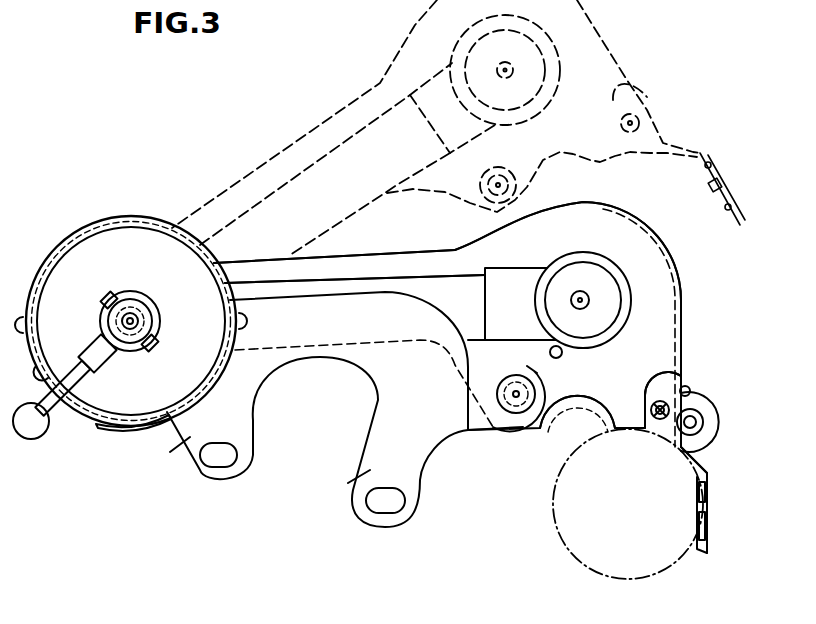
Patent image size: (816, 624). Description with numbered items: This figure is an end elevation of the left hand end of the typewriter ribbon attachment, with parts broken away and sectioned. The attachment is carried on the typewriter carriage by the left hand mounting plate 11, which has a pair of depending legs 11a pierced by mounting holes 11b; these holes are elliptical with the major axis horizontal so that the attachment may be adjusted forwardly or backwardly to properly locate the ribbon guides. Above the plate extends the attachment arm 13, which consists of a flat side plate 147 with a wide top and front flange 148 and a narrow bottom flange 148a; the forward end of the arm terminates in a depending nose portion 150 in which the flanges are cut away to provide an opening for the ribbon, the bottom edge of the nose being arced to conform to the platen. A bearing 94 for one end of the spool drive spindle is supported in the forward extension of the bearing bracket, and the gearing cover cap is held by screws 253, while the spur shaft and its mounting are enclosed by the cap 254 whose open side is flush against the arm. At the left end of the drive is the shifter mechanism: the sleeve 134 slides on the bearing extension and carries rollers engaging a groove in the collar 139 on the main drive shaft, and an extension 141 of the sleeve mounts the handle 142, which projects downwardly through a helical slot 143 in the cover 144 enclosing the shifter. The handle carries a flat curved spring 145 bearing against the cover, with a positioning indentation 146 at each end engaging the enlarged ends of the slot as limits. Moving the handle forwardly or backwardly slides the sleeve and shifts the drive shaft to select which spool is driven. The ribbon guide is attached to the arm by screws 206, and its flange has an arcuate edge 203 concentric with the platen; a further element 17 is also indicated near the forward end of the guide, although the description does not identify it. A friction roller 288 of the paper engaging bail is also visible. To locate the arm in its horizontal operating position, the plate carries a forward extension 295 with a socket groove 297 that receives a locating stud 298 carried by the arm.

The mounting plate 11 is at (334, 385).
The depending legs 11a is at (261, 472).
The mounting holes 11b is at (215, 462).
The attachment arm 13 is at (557, 210).
The bracket 17 is at (716, 465).
The bearing 94 is at (568, 255).
The sleeve 134 is at (145, 300).
The collar 139 is at (148, 318).
The extension 141 is at (100, 366).
The handle 142 is at (30, 440).
The helical slot 143 is at (115, 432).
The cover 144 is at (50, 262).
The flat curved spring 145 is at (70, 420).
The positioning indentation 146 is at (50, 370).
The flat side plate 147 is at (380, 268).
The top and front flange 148 is at (645, 240).
The bottom flange 148a is at (577, 414).
The depending nose portion 150 is at (680, 302).
The arcuate edge 203 is at (676, 458).
The screws 206 is at (688, 389).
The screws 253 is at (557, 352).
The cap 254 is at (427, 285).
The friction rollers 288 is at (705, 403).
The extension 295 is at (518, 420).
The socket groove 297 is at (495, 425).
The locating stud 298 is at (517, 380).